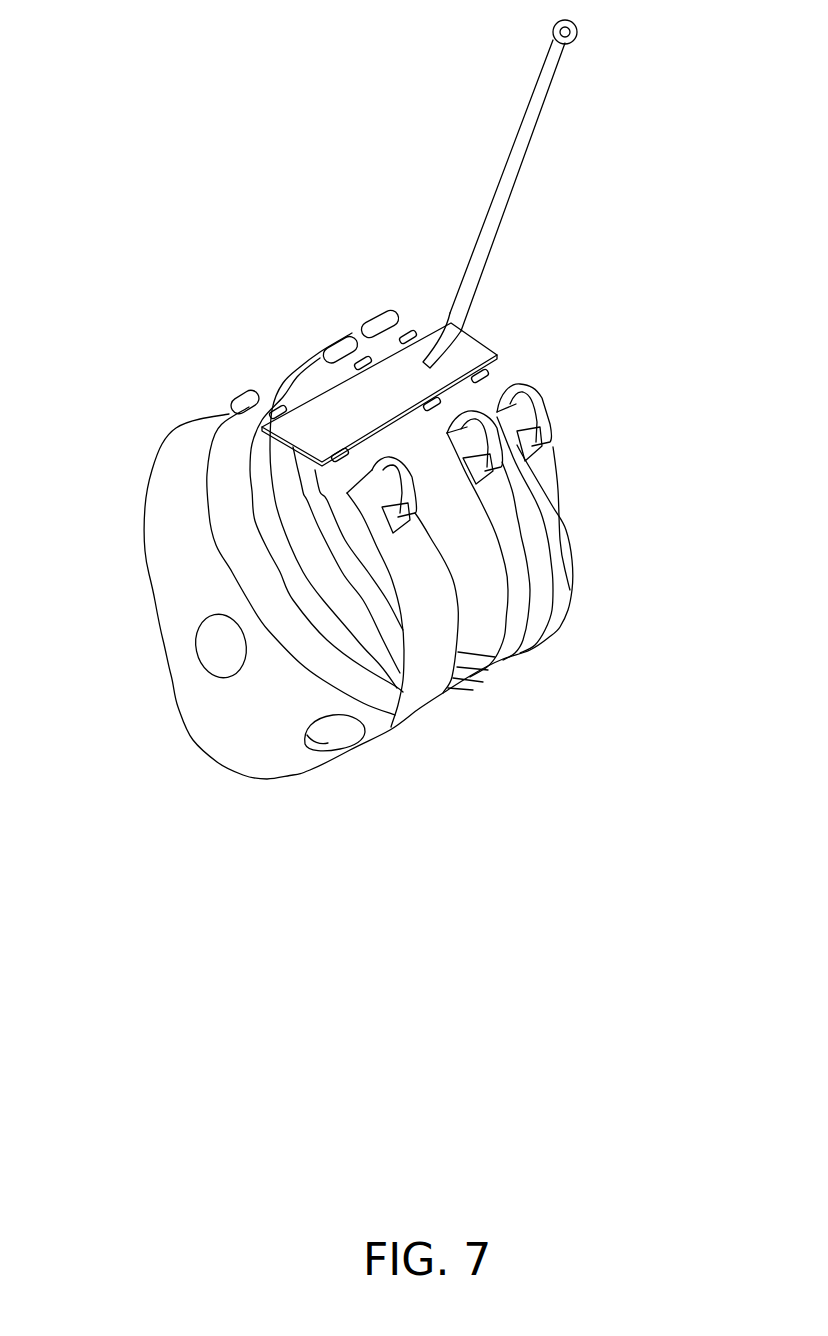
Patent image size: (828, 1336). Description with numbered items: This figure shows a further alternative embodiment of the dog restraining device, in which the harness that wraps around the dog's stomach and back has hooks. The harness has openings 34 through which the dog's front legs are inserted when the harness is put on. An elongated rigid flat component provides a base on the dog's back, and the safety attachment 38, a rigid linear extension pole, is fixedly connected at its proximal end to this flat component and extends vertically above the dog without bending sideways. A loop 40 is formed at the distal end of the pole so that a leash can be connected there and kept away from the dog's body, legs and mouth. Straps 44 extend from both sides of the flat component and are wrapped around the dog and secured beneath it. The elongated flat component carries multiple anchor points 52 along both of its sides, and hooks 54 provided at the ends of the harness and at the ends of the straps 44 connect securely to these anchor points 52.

The openings 34 is at (210, 655).
The safety attachment 38 is at (542, 122).
The loop 40 is at (580, 28).
The straps 44 is at (283, 373).
The anchor points 52 is at (483, 379).
The hooks 54 is at (540, 401).